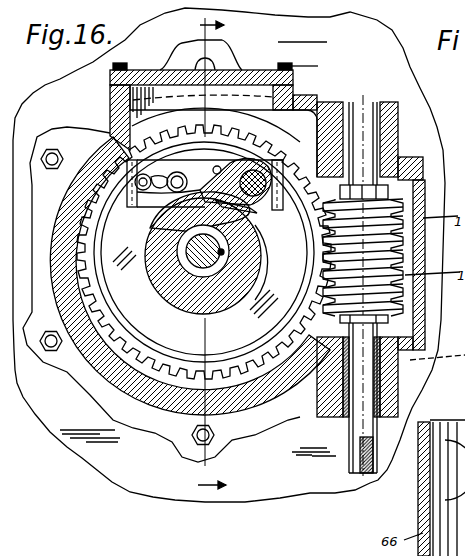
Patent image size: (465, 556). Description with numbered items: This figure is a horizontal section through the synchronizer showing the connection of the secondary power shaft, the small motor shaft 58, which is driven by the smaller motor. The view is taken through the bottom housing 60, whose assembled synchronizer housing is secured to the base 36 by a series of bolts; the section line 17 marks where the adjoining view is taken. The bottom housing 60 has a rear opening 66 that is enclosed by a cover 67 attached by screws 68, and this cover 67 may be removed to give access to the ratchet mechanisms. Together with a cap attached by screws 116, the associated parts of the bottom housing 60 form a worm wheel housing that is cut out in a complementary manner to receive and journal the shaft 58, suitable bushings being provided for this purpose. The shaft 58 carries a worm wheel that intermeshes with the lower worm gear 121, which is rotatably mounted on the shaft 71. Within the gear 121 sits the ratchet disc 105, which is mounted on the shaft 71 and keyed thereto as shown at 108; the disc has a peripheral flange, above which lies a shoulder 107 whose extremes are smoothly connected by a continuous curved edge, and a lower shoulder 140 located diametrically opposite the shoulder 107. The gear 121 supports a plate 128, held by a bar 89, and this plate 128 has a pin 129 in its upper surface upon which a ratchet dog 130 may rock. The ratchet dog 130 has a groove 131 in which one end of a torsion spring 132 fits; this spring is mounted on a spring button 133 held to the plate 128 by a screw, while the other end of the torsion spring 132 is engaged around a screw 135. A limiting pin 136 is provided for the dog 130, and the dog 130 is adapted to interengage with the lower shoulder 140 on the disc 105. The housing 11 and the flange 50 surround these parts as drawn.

The worm shaft bearing housing 11 is at (385, 140).
The section line 17- 17 is at (199, 257).
The base 36 is at (247, 493).
The housing flange 50 is at (137, 440).
The small motor shaft 58 is at (350, 473).
The bottom housing 60 is at (113, 383).
The rear opening 66 is at (266, 88).
The cover 67 is at (305, 71).
The screws 68 is at (121, 62).
The shaft 71 is at (197, 267).
The bracket bar 89 is at (135, 162).
The ratchet disc 105 is at (167, 282).
The shoulder 107 is at (269, 271).
The key 108 is at (221, 252).
The screws 116 is at (381, 383).
The lower worm gear 121 is at (252, 367).
The plate 128 is at (135, 151).
The pin 129 is at (262, 162).
The ratchet dog 130 is at (257, 210).
The groove 131 is at (236, 168).
The torsion spring 132 is at (190, 170).
The spring button 133 is at (177, 172).
The screw 135 is at (150, 197).
The limiting pin 136 is at (217, 165).
The lower shoulder 140 is at (160, 212).